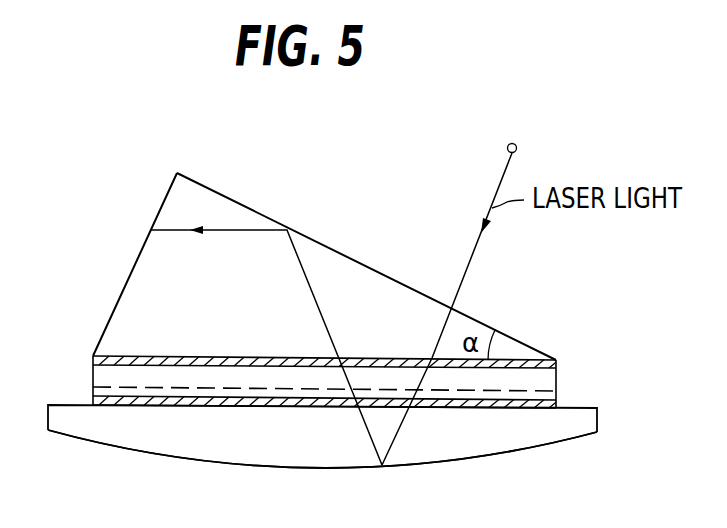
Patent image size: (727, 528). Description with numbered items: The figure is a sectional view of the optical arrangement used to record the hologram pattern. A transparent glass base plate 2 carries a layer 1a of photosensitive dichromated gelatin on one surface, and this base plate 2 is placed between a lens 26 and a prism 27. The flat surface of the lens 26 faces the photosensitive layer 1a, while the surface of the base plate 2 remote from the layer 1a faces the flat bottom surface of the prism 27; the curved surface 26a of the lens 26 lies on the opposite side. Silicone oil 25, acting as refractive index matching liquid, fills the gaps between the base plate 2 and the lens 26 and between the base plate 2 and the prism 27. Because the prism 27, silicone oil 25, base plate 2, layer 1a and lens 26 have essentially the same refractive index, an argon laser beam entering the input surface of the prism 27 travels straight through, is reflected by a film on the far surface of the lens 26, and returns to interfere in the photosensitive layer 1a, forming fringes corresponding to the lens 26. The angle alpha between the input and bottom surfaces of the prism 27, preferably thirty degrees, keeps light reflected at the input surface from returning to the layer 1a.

The photosensitive layer 1a is at (92, 392).
The transparent base plate 2 is at (546, 384).
The silicone oil 25 is at (558, 363).
The lens 26 is at (467, 452).
The curved surface of lens 26a is at (155, 447).
The prism 27 is at (360, 273).